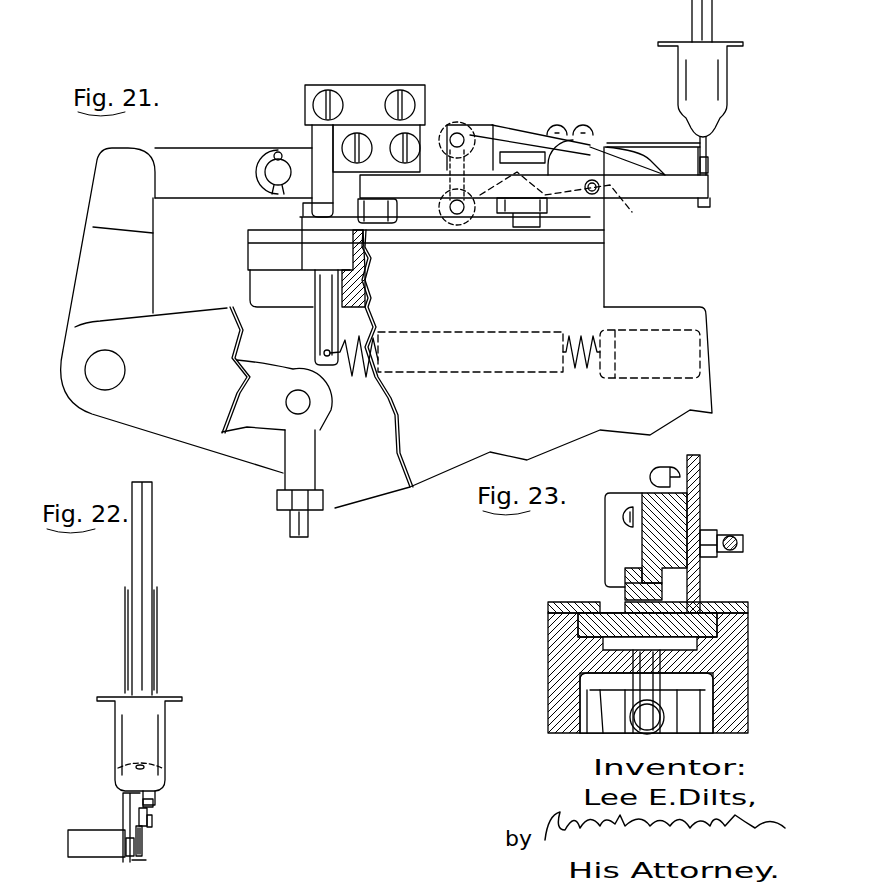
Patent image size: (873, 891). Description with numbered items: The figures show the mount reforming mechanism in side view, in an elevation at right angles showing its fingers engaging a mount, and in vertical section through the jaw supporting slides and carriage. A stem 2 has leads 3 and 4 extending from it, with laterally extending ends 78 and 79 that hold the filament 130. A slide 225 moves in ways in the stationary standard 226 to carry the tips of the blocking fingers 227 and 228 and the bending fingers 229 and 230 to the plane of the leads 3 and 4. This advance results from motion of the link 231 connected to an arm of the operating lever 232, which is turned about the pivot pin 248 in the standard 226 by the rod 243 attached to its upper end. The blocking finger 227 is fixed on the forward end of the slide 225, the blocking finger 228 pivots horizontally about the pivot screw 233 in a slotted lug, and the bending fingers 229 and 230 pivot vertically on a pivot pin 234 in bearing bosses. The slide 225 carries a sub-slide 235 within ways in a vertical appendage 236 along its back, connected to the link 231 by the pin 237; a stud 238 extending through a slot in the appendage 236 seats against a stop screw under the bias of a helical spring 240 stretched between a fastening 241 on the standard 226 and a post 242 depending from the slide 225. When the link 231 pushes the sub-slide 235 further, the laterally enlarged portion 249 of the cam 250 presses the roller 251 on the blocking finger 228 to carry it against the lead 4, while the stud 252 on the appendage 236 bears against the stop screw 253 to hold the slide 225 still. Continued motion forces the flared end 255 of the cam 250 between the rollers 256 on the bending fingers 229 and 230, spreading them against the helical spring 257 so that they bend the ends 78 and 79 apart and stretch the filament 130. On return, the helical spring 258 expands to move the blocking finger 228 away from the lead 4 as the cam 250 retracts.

In FIG. 21, the stem 2 is at (728, 80).
In FIG. 22, the stem 2 is at (165, 738).
In FIG. 22, the lead 3 is at (158, 796).
In FIG. 21, the lead 4 is at (710, 148).
In FIG. 22, the lead 4 is at (122, 800).
In FIG. 22, the laterally extending end of lead 78 is at (150, 813).
In FIG. 22, the laterally extending end of lead 79 is at (142, 862).
In FIG. 22, the filament 130 is at (145, 843).
In FIG. 21, the slide 225 is at (610, 233).
In FIG. 23, the slide 225 is at (605, 605).
In FIG. 21, the standard 226 is at (638, 307).
In FIG. 23, the standard 226 is at (548, 655).
In FIG. 21, the blocking finger 227 is at (708, 140).
In FIG. 22, the blocking finger 227 is at (156, 803).
In FIG. 21, the blocking finger 228 is at (712, 186).
In FIG. 22, the blocking finger 228 is at (83, 832).
In FIG. 21, the bending finger 229 is at (710, 165).
In FIG. 22, the bending finger 229 is at (155, 824).
In FIG. 21, the bending finger 230 is at (712, 205).
In FIG. 22, the bending finger 230 is at (127, 858).
In FIG. 21, the link 231 is at (200, 148).
In FIG. 21, the operating lever 232 is at (88, 256).
In FIG. 23, the operating lever 232 is at (633, 686).
In FIG. 21, the pivot screw 233 is at (523, 150).
In FIG. 21, the pivot pin 234 is at (575, 165).
In FIG. 21, the sub-slide 235 is at (305, 128).
In FIG. 23, the sub-slide 235 is at (660, 487).
In FIG. 21, the vertical appendage 236 is at (312, 140).
In FIG. 23, the vertical appendage 236 is at (700, 495).
In FIG. 21, the pin 237 is at (270, 160).
In FIG. 23, the stud 238 is at (710, 530).
In FIG. 21, the helical spring 240 is at (355, 375).
In FIG. 23, the helical spring 240 is at (640, 733).
In FIG. 21, the fastening 241 is at (700, 378).
In FIG. 21, the post 242 is at (315, 322).
In FIG. 23, the post 242 is at (662, 686).
In FIG. 21, the rod 243 is at (308, 520).
In FIG. 21, the pivot pin 248 is at (100, 388).
In FIG. 21, the laterally enlarged portion 249 is at (308, 208).
In FIG. 23, the laterally enlarged portion 249 is at (625, 553).
In FIG. 21, the cam 250 is at (420, 136).
In FIG. 23, the cam 250 is at (640, 493).
In FIG. 21, the roller 251 is at (407, 222).
In FIG. 23, the stud 252 is at (735, 536).
In FIG. 23, the stop screw 253 is at (738, 550).
In FIG. 21, the flared end 255 is at (470, 180).
In FIG. 21, the rollers 256 is at (470, 130).
In FIG. 21, the helical spring 257 is at (450, 232).
In FIG. 21, the helical spring 258 is at (632, 206).